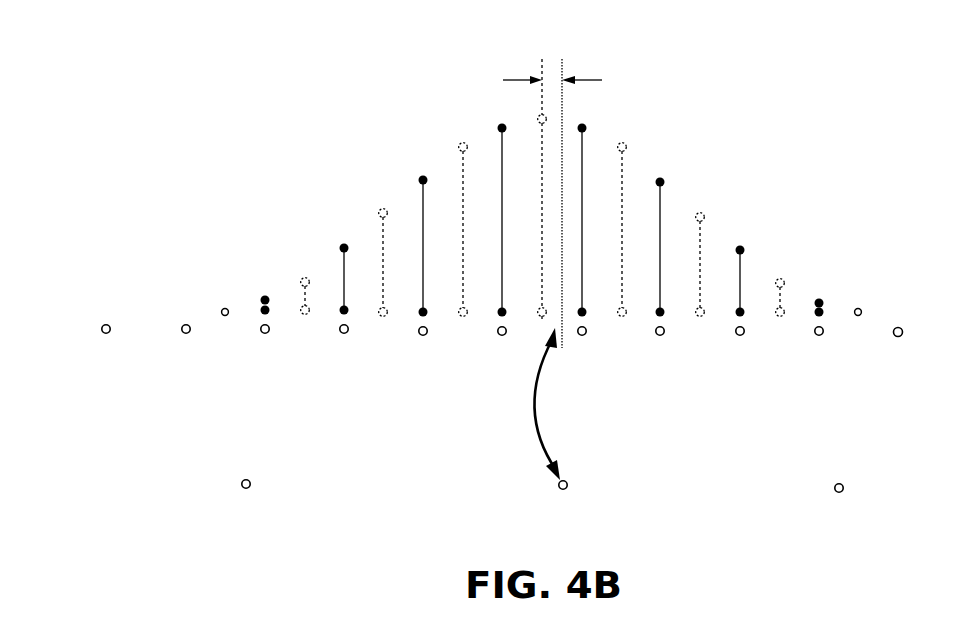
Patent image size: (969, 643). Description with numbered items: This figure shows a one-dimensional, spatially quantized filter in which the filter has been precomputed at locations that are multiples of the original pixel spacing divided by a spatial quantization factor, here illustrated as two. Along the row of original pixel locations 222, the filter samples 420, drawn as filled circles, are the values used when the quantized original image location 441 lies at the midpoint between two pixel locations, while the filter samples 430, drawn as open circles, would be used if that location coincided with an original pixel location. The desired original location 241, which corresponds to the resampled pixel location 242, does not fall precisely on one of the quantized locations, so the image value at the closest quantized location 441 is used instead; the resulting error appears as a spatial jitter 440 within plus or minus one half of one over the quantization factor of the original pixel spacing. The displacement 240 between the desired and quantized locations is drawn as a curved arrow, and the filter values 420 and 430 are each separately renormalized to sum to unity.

The pixel locations 222 is at (106, 324).
The spatial jitter 440 is at (582, 80).
The filter samples 420 is at (586, 127).
The filter samples 430 is at (626, 147).
The original image location 441 is at (539, 319).
The original location 241 is at (562, 345).
The shift distance 240 is at (533, 414).
The resampled pixel location 242 is at (562, 479).